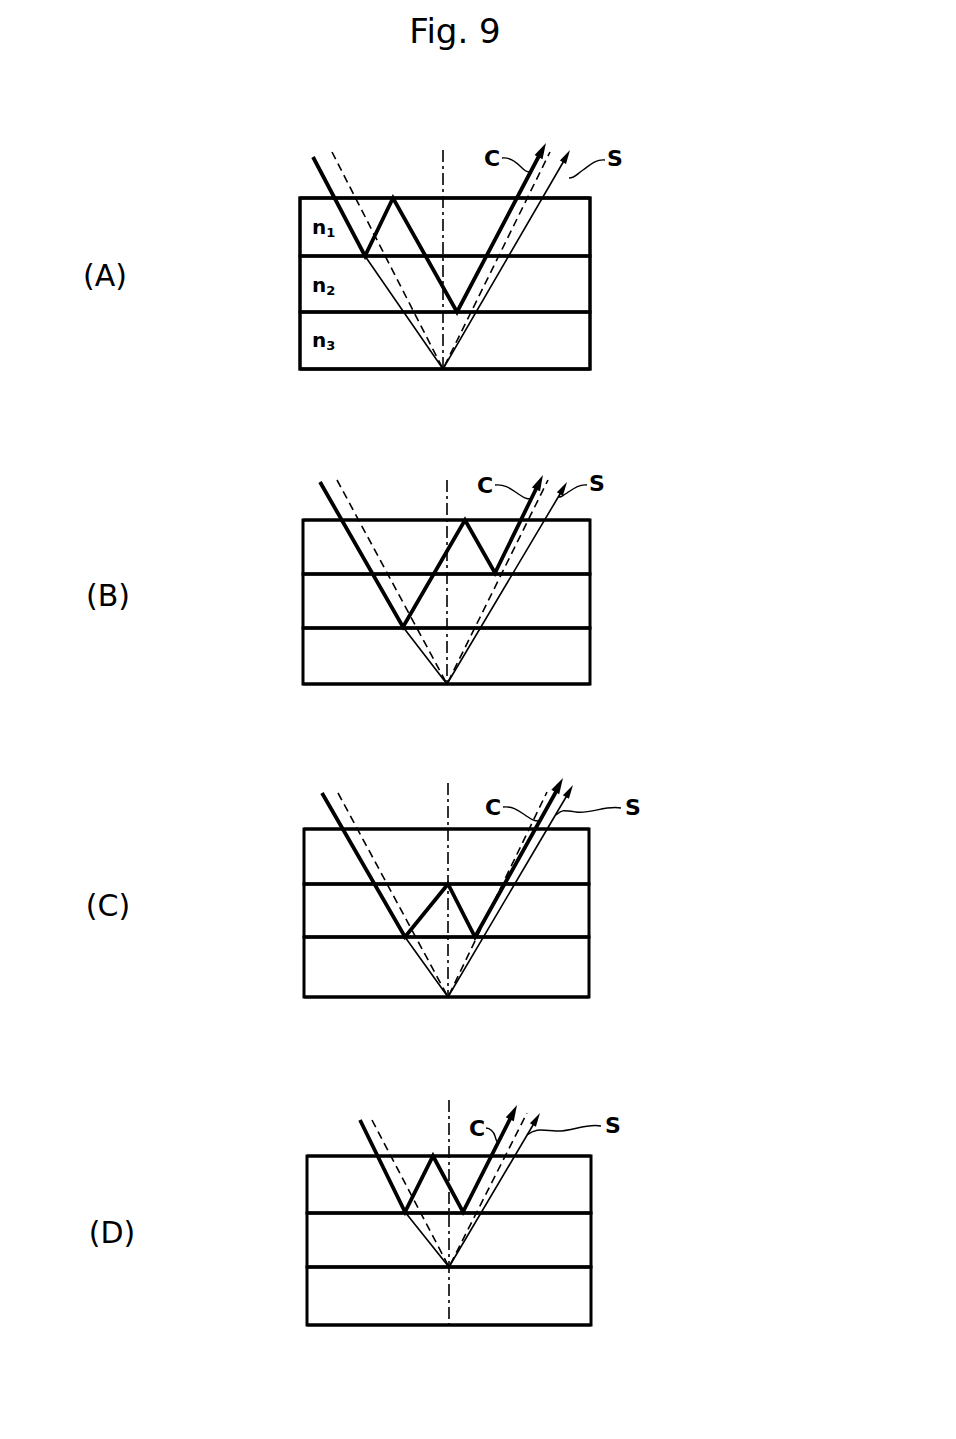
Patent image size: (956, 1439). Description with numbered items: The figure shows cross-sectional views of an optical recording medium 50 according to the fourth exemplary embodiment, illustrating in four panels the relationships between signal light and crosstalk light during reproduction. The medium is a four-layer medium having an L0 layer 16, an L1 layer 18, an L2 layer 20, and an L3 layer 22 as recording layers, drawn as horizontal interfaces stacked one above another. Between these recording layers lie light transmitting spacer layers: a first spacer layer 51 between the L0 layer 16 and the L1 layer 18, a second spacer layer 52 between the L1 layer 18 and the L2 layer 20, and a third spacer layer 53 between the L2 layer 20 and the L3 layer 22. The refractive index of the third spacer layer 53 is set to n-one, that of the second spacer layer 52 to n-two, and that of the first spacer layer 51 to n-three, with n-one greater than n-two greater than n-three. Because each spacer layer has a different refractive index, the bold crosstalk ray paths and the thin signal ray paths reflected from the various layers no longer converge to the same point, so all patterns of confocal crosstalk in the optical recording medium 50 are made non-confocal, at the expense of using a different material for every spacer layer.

The optical recording medium 50 is at (214, 179).
The L3 layer 22 is at (313, 198).
The L2 layer 20 is at (313, 256).
The L1 layer 18 is at (318, 312).
The L0 layer 16 is at (318, 369).
The third spacer layer 53 is at (590, 225).
The second spacer layer 52 is at (590, 273).
The first spacer layer 51 is at (590, 335).